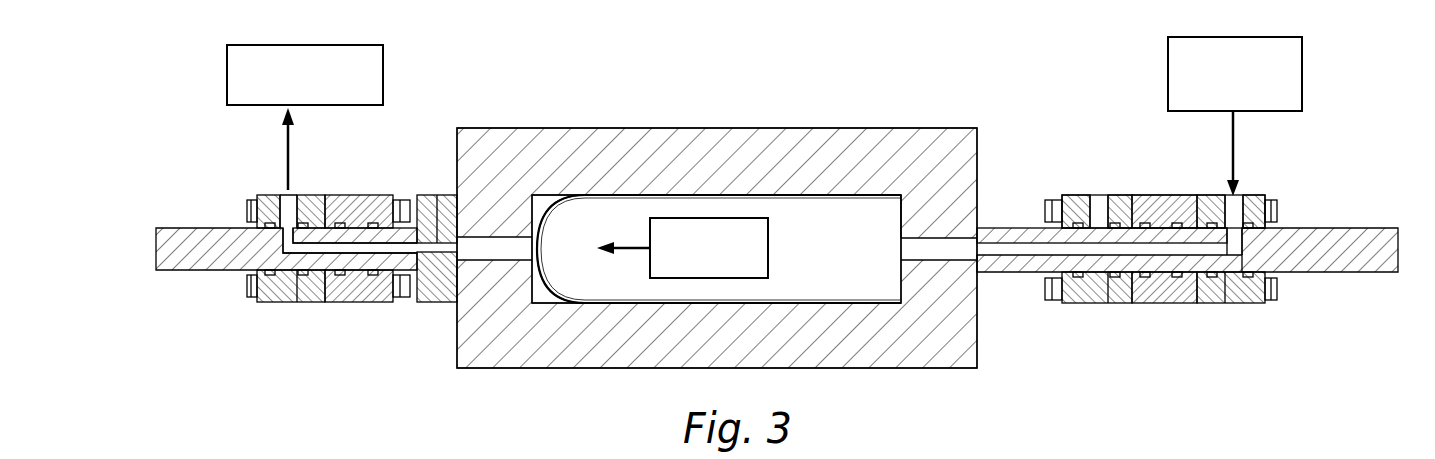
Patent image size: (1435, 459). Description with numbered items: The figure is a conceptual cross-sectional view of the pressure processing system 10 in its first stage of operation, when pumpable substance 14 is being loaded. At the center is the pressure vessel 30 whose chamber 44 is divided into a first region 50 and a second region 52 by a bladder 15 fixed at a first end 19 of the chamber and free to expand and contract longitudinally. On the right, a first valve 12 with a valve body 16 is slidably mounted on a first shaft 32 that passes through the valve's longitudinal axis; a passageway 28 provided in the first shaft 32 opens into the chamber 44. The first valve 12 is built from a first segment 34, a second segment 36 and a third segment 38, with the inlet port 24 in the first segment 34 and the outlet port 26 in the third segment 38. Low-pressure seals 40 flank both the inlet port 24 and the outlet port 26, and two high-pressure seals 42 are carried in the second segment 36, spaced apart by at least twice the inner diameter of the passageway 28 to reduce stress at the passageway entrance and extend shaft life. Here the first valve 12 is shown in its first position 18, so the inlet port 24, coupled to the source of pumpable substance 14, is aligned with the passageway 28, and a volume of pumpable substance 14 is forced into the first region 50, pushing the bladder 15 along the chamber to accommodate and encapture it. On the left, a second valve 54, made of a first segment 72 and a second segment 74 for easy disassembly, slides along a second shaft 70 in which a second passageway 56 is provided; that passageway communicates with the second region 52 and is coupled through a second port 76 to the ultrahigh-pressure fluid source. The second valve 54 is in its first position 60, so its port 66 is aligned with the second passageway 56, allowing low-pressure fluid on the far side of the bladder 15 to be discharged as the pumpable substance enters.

The pressure processing system 10 is at (459, 118).
The first valve 12 is at (1297, 190).
The pumpable substance 14 is at (770, 251).
The bladder 15 is at (640, 306).
The valve body 16 is at (1054, 188).
The first position 18 is at (1211, 189).
The first end 19 is at (902, 186).
The inlet port 24 is at (1238, 210).
The outlet port 26 is at (1100, 204).
The passageway 28 is at (987, 252).
The pressure vessel 30 is at (910, 352).
The first shaft 32 is at (1347, 262).
The first segment 34 is at (1240, 285).
The second segment 36 is at (1155, 290).
The third segment 38 is at (1095, 290).
The low-pressure seals 40 is at (268, 223).
The high-pressure seals 42 is at (343, 279).
The chamber 44 is at (689, 190).
The first region 50 is at (840, 280).
The second region 52 is at (537, 205).
The second valve 54 is at (253, 310).
The second passageway 56 is at (347, 250).
The first position 60 is at (237, 186).
The port 66 is at (284, 198).
The second shaft 70 is at (167, 240).
The first segment 72 is at (309, 198).
The second segment 74 is at (356, 198).
The second port 76 is at (434, 198).